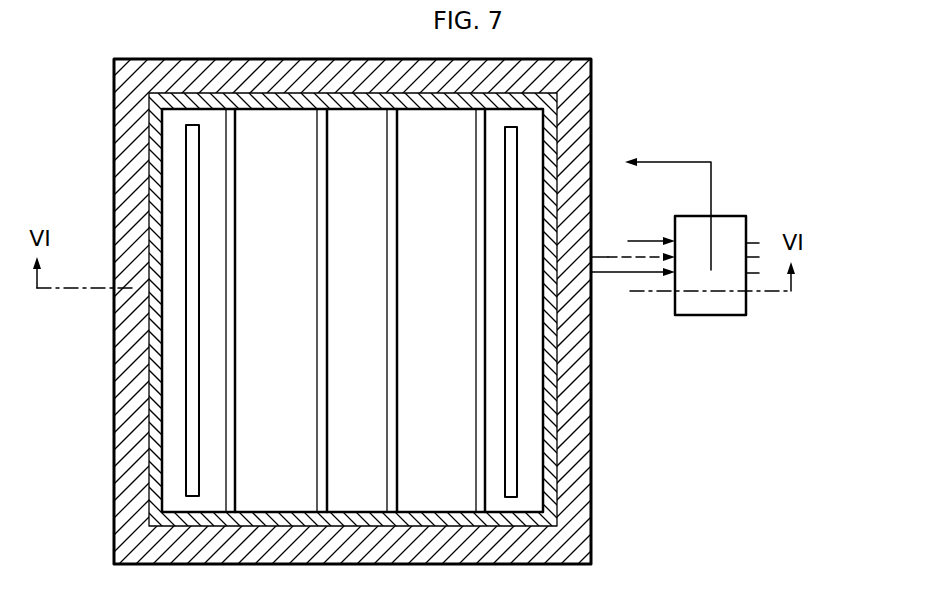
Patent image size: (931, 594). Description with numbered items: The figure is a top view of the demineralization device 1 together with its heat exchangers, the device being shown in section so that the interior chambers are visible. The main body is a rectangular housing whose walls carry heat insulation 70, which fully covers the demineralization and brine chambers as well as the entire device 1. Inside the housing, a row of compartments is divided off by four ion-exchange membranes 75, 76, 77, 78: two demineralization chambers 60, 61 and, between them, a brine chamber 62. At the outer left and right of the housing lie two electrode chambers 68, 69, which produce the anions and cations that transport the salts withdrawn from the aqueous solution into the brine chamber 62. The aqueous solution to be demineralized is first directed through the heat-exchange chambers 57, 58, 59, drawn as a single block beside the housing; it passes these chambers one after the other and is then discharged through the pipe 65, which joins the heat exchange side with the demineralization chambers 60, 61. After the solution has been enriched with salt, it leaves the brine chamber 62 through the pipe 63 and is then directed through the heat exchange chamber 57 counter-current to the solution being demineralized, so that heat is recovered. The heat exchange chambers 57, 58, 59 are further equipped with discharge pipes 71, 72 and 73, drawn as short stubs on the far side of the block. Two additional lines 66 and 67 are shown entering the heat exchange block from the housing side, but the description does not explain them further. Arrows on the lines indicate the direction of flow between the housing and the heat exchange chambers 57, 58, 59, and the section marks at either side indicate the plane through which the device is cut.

The device 1 is at (596, 490).
The heat insulation 70 is at (285, 77).
The ion-exchange membrane 75 is at (231, 181).
The ion-exchange membrane 76 is at (321, 181).
The ion-exchange membrane 77 is at (392, 181).
The ion-exchange membrane 78 is at (478, 253).
The demineralization chamber 60 is at (257, 330).
The brine chamber 62 is at (366, 330).
The demineralization chamber 61 is at (446, 330).
The electrode chamber 68 is at (212, 432).
The electrode chamber 69 is at (497, 405).
The heat-exchange chamber 57 is at (703, 302).
The heat-exchange chamber 58 is at (703, 302).
The heat-exchange chamber 59 is at (707, 310).
The pipe 65 is at (665, 157).
The sensor line 66 is at (610, 253).
The input line 67 is at (645, 238).
The pipe 63 is at (617, 275).
The discharge pipe 73 is at (755, 241).
The discharge pipe 71 is at (757, 259).
The discharge pipe 72 is at (750, 275).